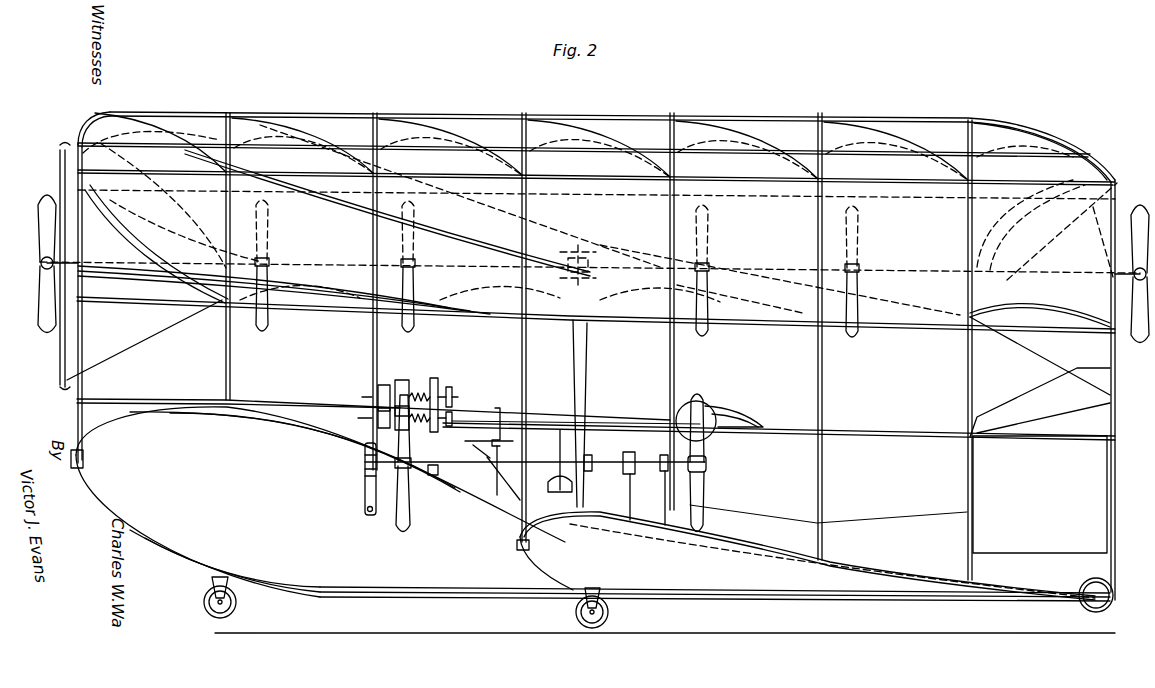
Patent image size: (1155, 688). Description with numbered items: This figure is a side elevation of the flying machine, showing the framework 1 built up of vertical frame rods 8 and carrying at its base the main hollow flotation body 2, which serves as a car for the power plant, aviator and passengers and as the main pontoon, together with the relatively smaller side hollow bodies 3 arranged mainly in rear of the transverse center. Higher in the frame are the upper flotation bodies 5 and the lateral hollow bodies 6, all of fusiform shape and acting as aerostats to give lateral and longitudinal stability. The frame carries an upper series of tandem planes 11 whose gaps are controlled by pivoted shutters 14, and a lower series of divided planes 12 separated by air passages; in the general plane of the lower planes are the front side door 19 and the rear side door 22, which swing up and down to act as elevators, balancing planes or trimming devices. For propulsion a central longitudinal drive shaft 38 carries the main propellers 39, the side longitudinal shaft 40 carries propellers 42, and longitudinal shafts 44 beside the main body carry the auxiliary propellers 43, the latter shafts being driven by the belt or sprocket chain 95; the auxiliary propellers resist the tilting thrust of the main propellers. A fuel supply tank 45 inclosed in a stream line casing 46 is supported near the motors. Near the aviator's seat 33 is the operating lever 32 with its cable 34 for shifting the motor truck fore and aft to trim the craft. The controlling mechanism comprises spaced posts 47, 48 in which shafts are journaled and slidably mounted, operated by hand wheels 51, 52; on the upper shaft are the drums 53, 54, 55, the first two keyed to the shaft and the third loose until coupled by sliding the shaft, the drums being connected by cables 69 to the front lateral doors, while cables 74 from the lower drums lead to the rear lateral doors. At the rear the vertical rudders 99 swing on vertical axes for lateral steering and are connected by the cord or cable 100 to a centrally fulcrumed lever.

The framework 1 is at (587, 356).
The main hollow flotation body 2 is at (593, 517).
The side hollow bodies 3 is at (665, 572).
The upper flotation bodies 5 is at (600, 196).
The lateral hollow bodies 6 is at (173, 244).
The vertical frame rods 8 is at (819, 405).
The upper series of tandem planes 11 is at (576, 120).
The lower series of tandem planes 12 is at (476, 299).
The pivoted shutters 14 is at (680, 180).
The front side door or plane 19 is at (114, 294).
The rear side door or plane 22 is at (1056, 313).
The operating lever 32 is at (576, 450).
The aviator's seat 33 is at (587, 400).
The cable 34 is at (508, 505).
The central longitudinal drive shaft 38 is at (42, 262).
The propellers 39 is at (42, 215).
The side longitudinal shaft 40 is at (596, 220).
The propellers 42 is at (412, 206).
The auxiliary propellers 43 is at (402, 536).
The longitudinal shafts 44 is at (622, 462).
The fuel supply tank 45 is at (706, 402).
The stream line casing 46 is at (750, 418).
The post 47 is at (362, 455).
The post 48 is at (476, 441).
The hand wheel 51 is at (441, 395).
The hand wheel 52 is at (452, 412).
The drum or pulley 53 is at (410, 384).
The drum or pulley 54 is at (386, 385).
The drum or pulley 55 is at (372, 389).
The cables 69 is at (141, 395).
The cables 74 is at (1042, 368).
The belt or sprocket chain 95 is at (623, 480).
The rear vertical rudders 99 is at (1040, 494).
The cord or cable 100 is at (871, 523).